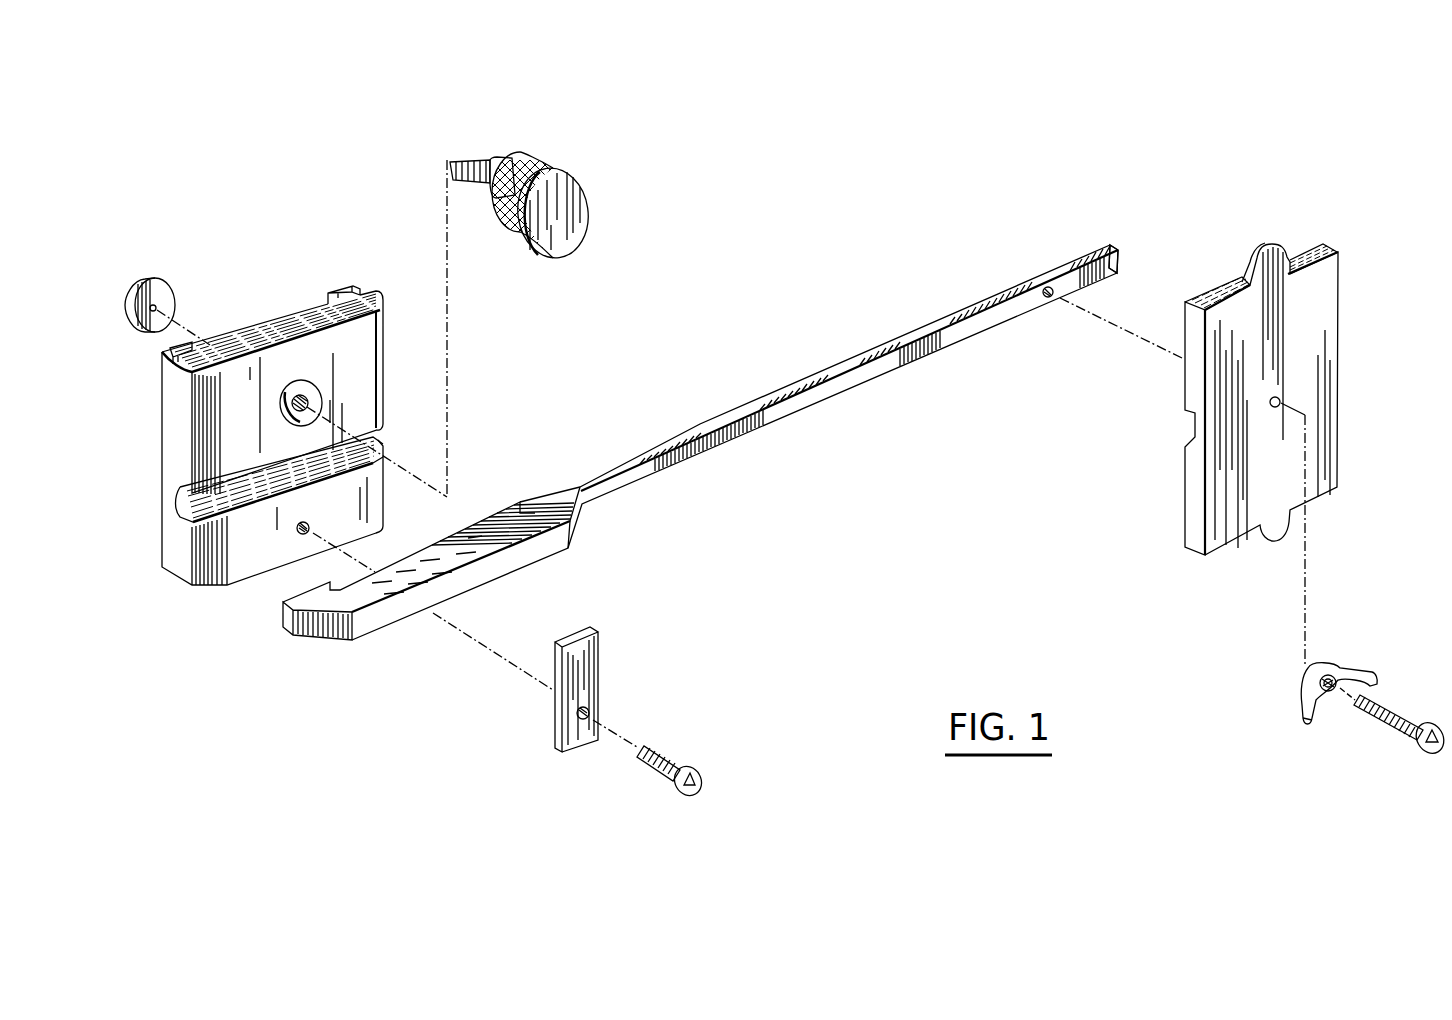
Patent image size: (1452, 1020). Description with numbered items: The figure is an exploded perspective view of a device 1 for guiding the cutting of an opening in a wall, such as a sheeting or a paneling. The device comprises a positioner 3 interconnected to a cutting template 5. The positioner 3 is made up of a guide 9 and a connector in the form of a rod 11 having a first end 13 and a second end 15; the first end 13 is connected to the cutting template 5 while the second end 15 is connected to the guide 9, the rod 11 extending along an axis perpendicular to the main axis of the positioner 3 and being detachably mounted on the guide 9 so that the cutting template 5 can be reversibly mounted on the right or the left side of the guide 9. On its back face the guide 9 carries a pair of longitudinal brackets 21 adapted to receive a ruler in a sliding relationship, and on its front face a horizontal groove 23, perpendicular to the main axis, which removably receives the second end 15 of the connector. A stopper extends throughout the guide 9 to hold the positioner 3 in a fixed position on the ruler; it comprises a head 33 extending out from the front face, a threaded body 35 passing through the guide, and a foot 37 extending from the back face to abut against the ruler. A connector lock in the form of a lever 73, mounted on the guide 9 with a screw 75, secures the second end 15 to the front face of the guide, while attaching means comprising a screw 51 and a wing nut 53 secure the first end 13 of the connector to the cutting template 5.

The guide assembly 1 is at (853, 218).
The positioner 3 is at (273, 229).
The cutting template 5 is at (1310, 240).
The guide 9 is at (383, 320).
The rod 11 is at (815, 413).
The first end 13 is at (1080, 245).
The second end 15 is at (360, 660).
The longitudinal brackets 21 is at (186, 346).
The horizontal groove 23 is at (186, 503).
The head 33 is at (573, 184).
The threaded body 35 is at (478, 155).
The foot 37 is at (156, 284).
The screw 51 is at (1416, 745).
The wing nut 53 is at (1362, 670).
The lever 73 is at (588, 655).
The screw 75 is at (670, 792).